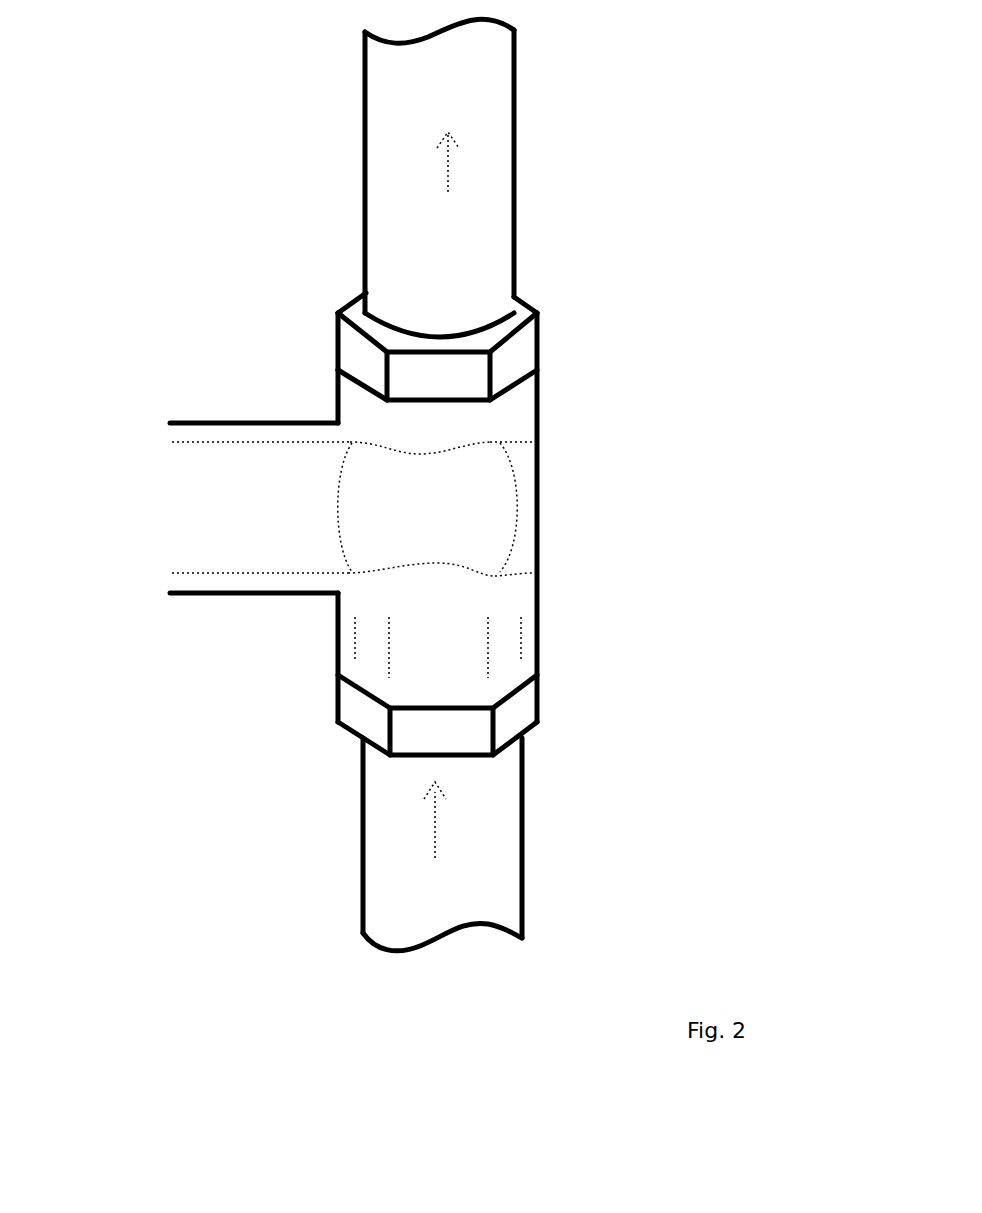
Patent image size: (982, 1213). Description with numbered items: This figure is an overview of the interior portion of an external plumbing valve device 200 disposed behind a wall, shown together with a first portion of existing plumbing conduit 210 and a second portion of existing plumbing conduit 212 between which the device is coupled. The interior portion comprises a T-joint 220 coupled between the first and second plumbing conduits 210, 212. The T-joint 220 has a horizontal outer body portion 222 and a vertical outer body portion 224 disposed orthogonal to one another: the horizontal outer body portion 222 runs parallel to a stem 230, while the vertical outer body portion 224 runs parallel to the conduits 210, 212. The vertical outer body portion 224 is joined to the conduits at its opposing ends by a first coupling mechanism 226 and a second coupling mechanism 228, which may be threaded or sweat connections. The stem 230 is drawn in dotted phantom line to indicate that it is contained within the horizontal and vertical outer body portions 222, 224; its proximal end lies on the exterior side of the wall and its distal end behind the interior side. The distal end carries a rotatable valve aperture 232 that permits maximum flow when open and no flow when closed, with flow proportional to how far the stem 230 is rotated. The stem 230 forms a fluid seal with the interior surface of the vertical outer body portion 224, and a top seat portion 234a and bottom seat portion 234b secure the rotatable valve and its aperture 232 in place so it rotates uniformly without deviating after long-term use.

The external plumbing valve device 200 is at (192, 916).
The first portion of existing plumbing conduit 210 is at (490, 97).
The second portion of existing plumbing conduit 212 is at (498, 815).
The T-joint 220 is at (164, 331).
The horizontal outer body portion 222 is at (231, 420).
The vertical outer body portion 224 is at (527, 600).
The first coupling mechanism 226 is at (518, 353).
The second coupling mechanism 228 is at (520, 712).
The stem 230 is at (228, 570).
The valve aperture 232 is at (437, 451).
The top seat portion 234a is at (337, 558).
The bottom seat portion 234b is at (527, 497).